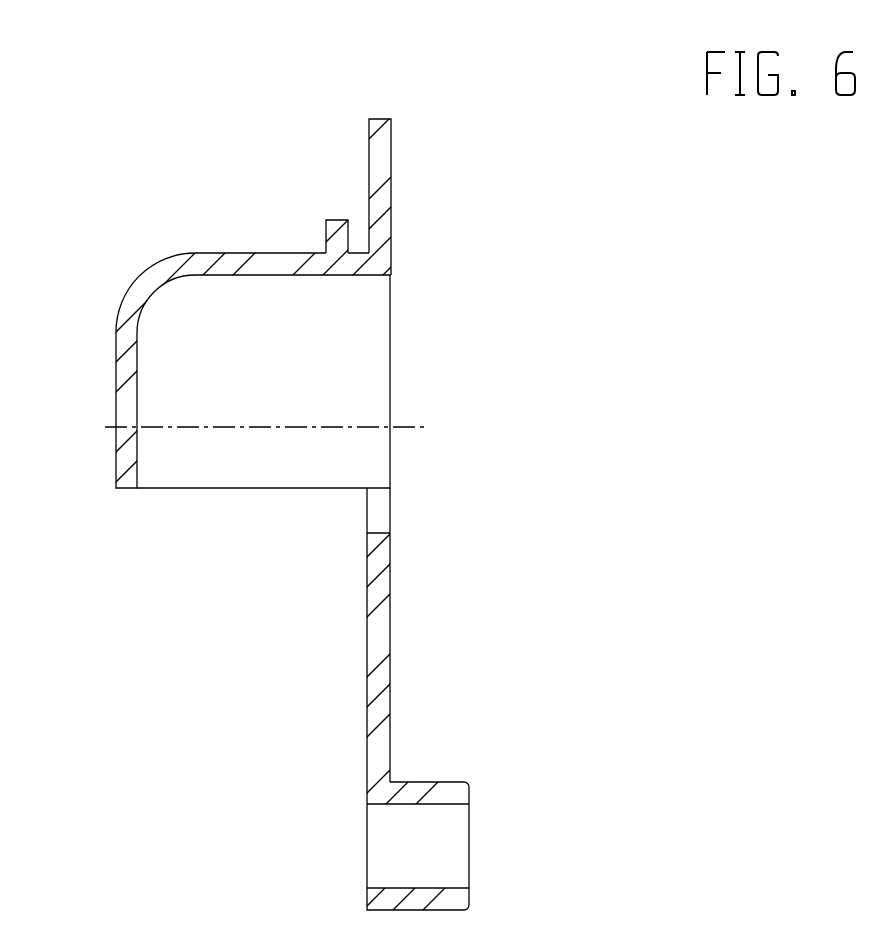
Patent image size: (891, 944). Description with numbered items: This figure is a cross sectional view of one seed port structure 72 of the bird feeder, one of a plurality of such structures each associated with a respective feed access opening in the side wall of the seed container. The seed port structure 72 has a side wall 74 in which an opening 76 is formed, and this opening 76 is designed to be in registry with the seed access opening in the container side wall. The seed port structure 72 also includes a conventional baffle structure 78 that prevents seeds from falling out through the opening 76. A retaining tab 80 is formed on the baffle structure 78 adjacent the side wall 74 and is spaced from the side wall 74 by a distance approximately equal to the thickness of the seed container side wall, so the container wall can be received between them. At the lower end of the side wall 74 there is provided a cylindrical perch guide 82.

The seed port structure 72 is at (513, 78).
The side wall 74 is at (391, 180).
The opening 76 is at (418, 383).
The baffle structure 78 is at (195, 250).
The retaining tab 80 is at (332, 220).
The cylindrical perch guide 82 is at (473, 780).